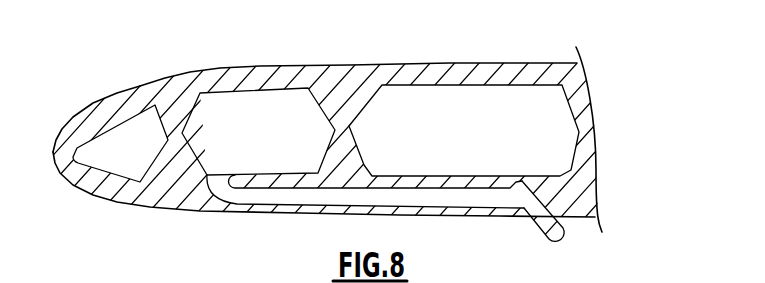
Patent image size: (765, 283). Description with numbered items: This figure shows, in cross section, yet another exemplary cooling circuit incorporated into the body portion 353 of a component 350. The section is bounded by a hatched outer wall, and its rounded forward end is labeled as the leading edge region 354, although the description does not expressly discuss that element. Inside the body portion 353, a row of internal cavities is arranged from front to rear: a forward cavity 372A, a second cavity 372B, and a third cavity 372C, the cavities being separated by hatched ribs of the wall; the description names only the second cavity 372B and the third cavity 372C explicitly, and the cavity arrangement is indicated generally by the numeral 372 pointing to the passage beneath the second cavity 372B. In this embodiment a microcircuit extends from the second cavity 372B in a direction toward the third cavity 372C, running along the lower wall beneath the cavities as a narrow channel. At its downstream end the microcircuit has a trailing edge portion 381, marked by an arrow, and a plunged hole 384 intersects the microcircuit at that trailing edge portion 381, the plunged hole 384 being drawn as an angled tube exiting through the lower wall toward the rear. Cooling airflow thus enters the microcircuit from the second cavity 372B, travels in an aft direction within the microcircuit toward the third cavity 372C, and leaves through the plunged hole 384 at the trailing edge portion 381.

The component 350 is at (313, 45).
The body portion 353 is at (473, 63).
The leading edge 354 is at (125, 72).
The cooling channel 372 is at (332, 196).
The first cooling cavity 372A is at (150, 157).
The second cavity 372B is at (288, 146).
The third cavity 372C is at (495, 143).
The trailing edge portion 381 is at (500, 212).
The plunged hole 384 is at (558, 238).